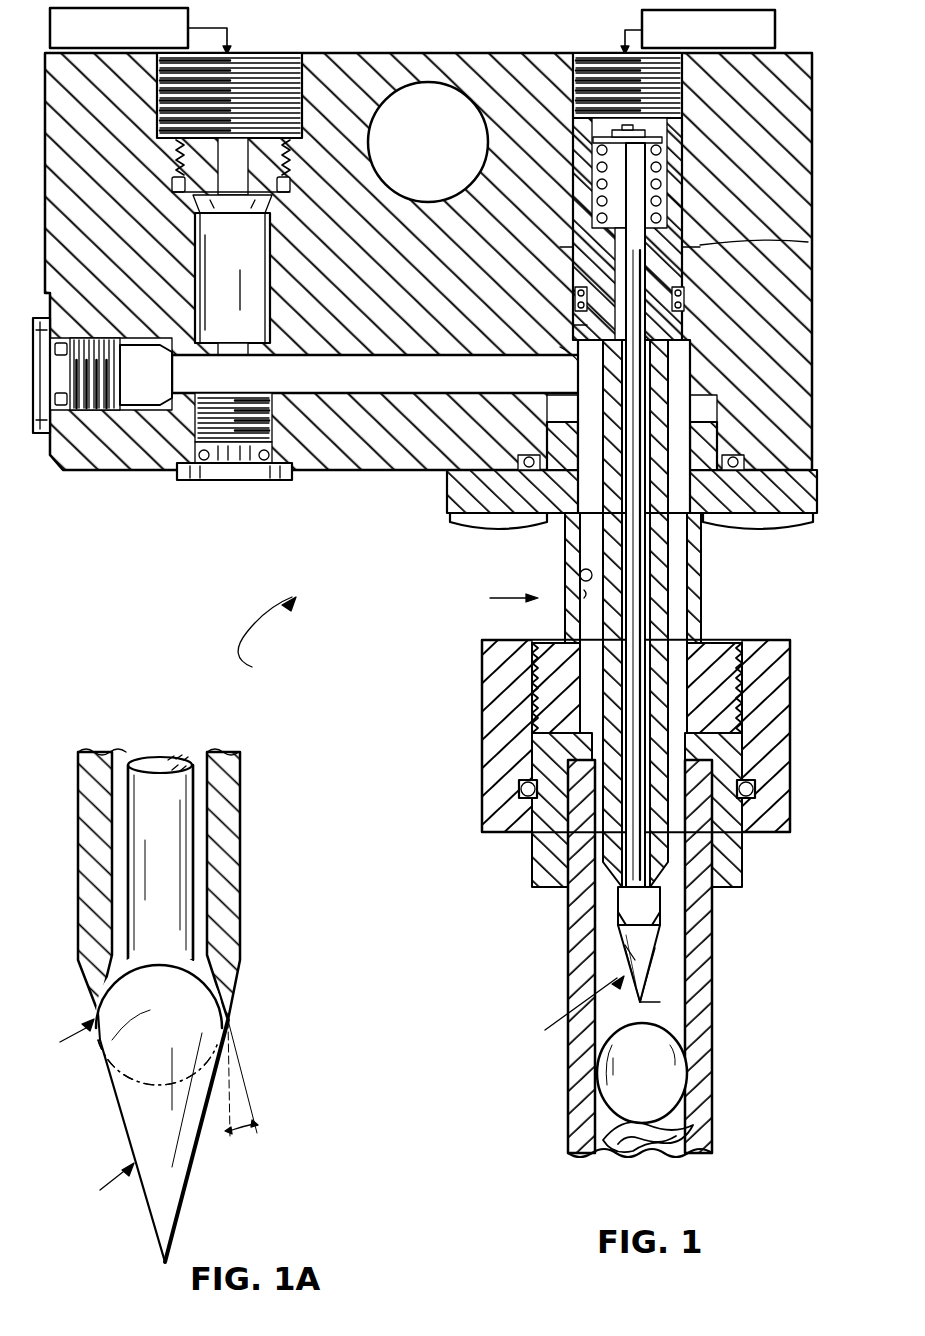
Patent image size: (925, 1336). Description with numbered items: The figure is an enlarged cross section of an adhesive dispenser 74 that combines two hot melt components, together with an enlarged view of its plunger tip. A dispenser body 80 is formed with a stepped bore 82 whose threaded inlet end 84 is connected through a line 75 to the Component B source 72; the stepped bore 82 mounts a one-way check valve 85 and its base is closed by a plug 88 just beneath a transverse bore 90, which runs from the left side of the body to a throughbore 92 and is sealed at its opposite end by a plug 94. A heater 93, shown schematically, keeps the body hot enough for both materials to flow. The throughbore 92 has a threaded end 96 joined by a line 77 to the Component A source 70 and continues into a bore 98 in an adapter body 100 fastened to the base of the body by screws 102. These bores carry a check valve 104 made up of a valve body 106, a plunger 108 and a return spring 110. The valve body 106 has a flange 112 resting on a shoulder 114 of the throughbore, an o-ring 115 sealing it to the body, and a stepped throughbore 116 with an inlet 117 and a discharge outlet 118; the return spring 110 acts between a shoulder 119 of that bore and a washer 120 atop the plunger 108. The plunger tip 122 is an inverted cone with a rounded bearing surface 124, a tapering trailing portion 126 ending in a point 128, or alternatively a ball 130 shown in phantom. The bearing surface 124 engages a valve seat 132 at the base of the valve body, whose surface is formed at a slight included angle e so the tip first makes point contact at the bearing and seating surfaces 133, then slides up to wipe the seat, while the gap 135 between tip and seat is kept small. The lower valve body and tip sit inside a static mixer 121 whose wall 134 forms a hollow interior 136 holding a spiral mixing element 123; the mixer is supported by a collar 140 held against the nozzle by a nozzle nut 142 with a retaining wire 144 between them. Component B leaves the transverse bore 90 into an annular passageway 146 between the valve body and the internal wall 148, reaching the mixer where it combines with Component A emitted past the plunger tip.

In FIG. 1, the Component A source 70 is at (782, 30).
In FIG. 1, the Component B source 72 is at (50, 34).
In FIG. 1, the adhesive dispenser 74 is at (267, 643).
In FIG. 1, the line 75 is at (232, 28).
In FIG. 1, the line 77 is at (620, 30).
In FIG. 1, the dispenser body 80 is at (510, 51).
In FIG. 1, the stepped bore 82 is at (305, 72).
In FIG. 1, the threaded inlet end 84 is at (265, 77).
In FIG. 1, the one-way check valve 85 is at (262, 283).
In FIG. 1, the plug 88 is at (236, 480).
In FIG. 1, the transverse bore 90 is at (402, 390).
In FIG. 1, the throughbore 92 is at (560, 346).
In FIG. 1, the heater 93 is at (432, 158).
In FIG. 1, the plug 94 is at (95, 446).
In FIG. 1, the threaded end 96 is at (575, 54).
In FIG. 1, the bore 98 is at (701, 590).
In FIG. 1, the adapter body 100 is at (499, 599).
In FIG. 1, the screws 102 is at (491, 540).
In FIG. 1, the check valve 104 is at (562, 258).
In FIG. 1, the valve body 106 is at (670, 614).
In FIG. 1, the plunger 108 is at (630, 676).
In FIG. 1A, the plunger 108 is at (160, 777).
In FIG. 1, the return spring 110 is at (595, 186).
In FIG. 1, the flange 112 is at (575, 310).
In FIG. 1, the shoulder 114 is at (573, 325).
In FIG. 1, the o-ring 115 is at (575, 287).
In FIG. 1, the stepped throughbore 116 is at (578, 242).
In FIG. 1, the inlet 117 is at (573, 103).
In FIG. 1, the discharge outlet 118 is at (620, 903).
In FIG. 1, the shoulder 119 is at (777, 246).
In FIG. 1, the washer 120 is at (605, 139).
In FIG. 1, the static mixer 121 is at (712, 1077).
In FIG. 1, the plunger tip 122 is at (579, 1009).
In FIG. 1A, the plunger tip 122 is at (139, 1141).
In FIG. 1, the spiral-shaped mixing element 123 is at (682, 1052).
In FIG. 1, the bearing surface 124 is at (658, 947).
In FIG. 1A, the bearing surface 124 is at (155, 1018).
In FIG. 1, the trailing portion 126 is at (647, 969).
In FIG. 1, the point 128 is at (643, 1003).
In FIG. 1A, the ball 130 is at (112, 1100).
In FIG. 1, the valve seat 132 is at (660, 920).
In FIG. 1A, the valve seat 132 is at (106, 966).
In FIG. 1A, the bearing and seating surfaces 133 is at (90, 985).
In FIG. 1, the wall 134 is at (712, 1108).
In FIG. 1A, the gap 135 is at (63, 1040).
In FIG. 1, the hollow interior 136 is at (600, 1052).
In FIG. 1, the collar 140 is at (528, 872).
In FIG. 1, the nozzle nut 142 is at (482, 782).
In FIG. 1, the retaining wire 144 is at (520, 792).
In FIG. 1, the annular-shaped passageway 146 is at (565, 629).
In FIG. 1, the internal wall 148 is at (580, 573).
In FIG. 1A, the included angle e is at (250, 1135).